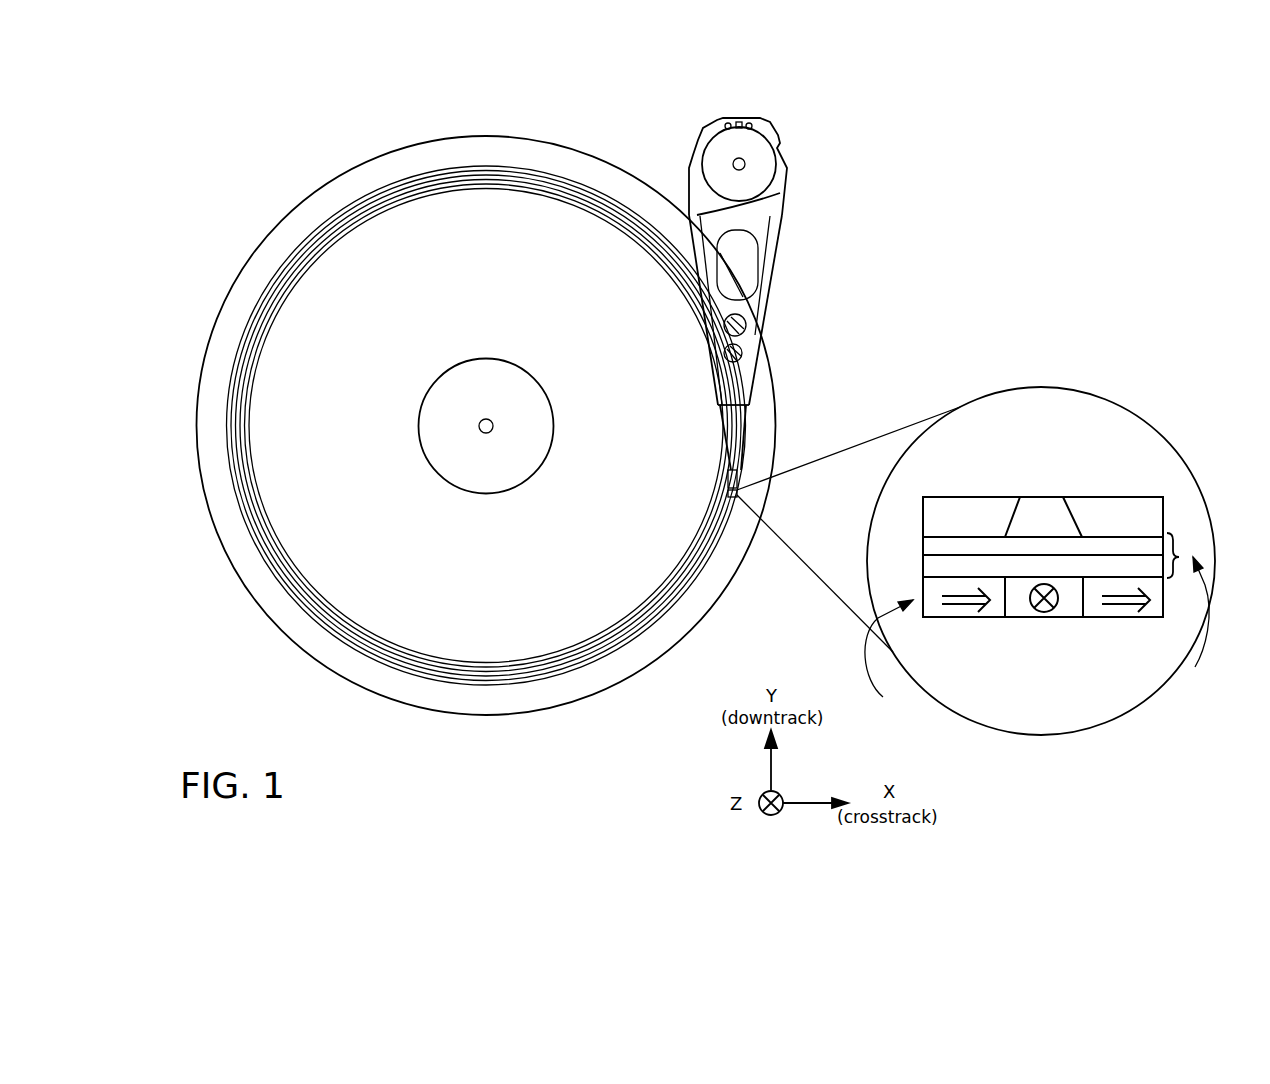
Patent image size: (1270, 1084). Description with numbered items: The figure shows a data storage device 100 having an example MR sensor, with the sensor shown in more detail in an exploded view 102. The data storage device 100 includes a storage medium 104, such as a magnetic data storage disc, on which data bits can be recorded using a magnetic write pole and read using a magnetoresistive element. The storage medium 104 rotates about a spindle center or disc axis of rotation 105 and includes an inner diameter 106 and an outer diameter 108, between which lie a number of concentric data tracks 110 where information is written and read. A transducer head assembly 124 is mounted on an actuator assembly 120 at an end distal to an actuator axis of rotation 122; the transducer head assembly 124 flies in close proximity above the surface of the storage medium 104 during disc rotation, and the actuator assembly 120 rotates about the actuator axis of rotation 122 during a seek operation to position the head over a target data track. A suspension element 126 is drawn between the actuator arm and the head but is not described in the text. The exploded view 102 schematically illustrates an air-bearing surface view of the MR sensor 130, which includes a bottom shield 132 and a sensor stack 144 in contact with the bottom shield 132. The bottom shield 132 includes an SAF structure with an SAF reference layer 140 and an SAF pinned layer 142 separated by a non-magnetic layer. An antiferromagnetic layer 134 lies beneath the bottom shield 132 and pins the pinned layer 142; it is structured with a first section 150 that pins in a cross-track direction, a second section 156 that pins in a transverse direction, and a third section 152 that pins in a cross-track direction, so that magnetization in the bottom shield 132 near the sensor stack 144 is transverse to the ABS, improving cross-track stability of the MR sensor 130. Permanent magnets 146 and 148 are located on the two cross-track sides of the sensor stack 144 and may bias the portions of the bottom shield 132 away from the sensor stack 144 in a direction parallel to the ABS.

The data storage device 100 is at (265, 120).
The exploded view 102 is at (1040, 387).
The storage medium 104 is at (545, 142).
The disc axis of rotation 105 is at (480, 422).
The inner diameter 106 is at (457, 360).
The outer diameter 108 is at (383, 187).
The data tracks 110 is at (645, 633).
The actuator assembly 120 is at (792, 237).
The actuator axis of rotation 122 is at (745, 161).
The transducer head assembly 124 is at (739, 500).
The suspension 126 is at (725, 427).
The MR sensor 130 is at (1055, 445).
The bottom shield 132 is at (1192, 627).
The antiferromagnetic layer 134 is at (889, 660).
The SAF reference layer 140 is at (923, 543).
The SAF pinned layer 142 is at (923, 562).
The sensor stack 144 is at (1038, 497).
The permanent magnet 146 is at (960, 497).
The permanent magnet 148 is at (1148, 497).
The first section 150 is at (1103, 618).
The third section 152 is at (973, 618).
The second section 156 is at (1057, 618).